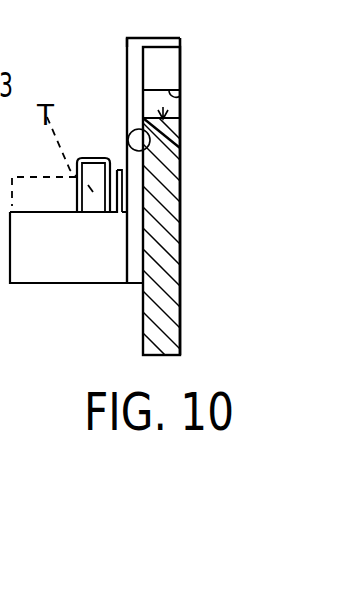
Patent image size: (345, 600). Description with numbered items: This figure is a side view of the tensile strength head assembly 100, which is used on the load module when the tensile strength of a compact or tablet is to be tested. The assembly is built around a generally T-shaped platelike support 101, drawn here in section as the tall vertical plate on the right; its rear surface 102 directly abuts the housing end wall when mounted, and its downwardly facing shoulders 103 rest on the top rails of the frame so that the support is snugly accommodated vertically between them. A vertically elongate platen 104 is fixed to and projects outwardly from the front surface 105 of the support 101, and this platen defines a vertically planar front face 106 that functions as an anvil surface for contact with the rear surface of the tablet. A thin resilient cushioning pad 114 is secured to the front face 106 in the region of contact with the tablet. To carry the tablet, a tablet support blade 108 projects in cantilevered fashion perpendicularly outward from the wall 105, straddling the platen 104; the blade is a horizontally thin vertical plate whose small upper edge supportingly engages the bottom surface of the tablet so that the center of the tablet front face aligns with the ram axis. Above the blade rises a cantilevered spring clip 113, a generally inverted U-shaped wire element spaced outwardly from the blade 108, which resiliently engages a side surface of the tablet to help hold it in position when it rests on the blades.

The tensile strength head assembly 100 is at (213, 193).
The T-shaped platelike support 101 is at (167, 287).
The rear surface 102 is at (180, 248).
The downwardly facing shoulders 103 is at (175, 95).
The platen 104 is at (134, 65).
The front surface 105 is at (152, 145).
The front face 106 is at (126, 84).
The tablet support blade 108 is at (50, 252).
The spring clip 113 is at (96, 158).
The resilient cushioning pad 114 is at (122, 217).